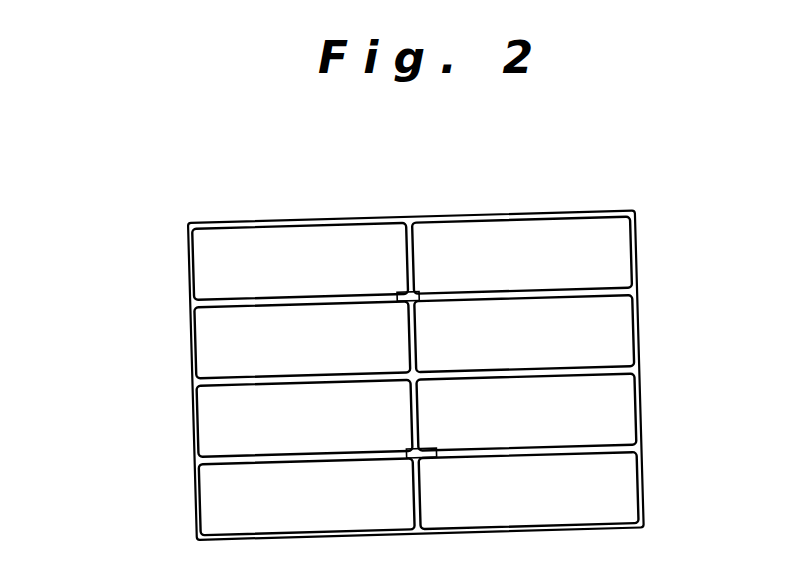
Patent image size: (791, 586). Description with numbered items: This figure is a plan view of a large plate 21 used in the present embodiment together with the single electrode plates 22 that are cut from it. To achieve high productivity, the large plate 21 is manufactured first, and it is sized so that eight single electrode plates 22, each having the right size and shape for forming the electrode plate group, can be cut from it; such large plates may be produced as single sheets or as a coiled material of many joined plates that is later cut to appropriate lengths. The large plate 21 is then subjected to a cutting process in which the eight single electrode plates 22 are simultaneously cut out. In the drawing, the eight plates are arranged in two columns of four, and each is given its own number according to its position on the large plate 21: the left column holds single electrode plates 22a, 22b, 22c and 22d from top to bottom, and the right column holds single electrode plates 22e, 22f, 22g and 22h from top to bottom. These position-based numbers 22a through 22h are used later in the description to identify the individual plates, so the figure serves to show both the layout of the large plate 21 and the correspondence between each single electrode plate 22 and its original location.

The large plate 21 is at (173, 242).
The single electrode plates 22 is at (205, 283).
The single electrode plate 22a is at (300, 261).
The single electrode plate 22b is at (302, 339).
The single electrode plate 22c is at (305, 418).
The single electrode plate 22d is at (307, 496).
The single electrode plate 22e is at (522, 255).
The single electrode plate 22f is at (524, 333).
The single electrode plate 22g is at (526, 412).
The single electrode plate 22h is at (529, 490).